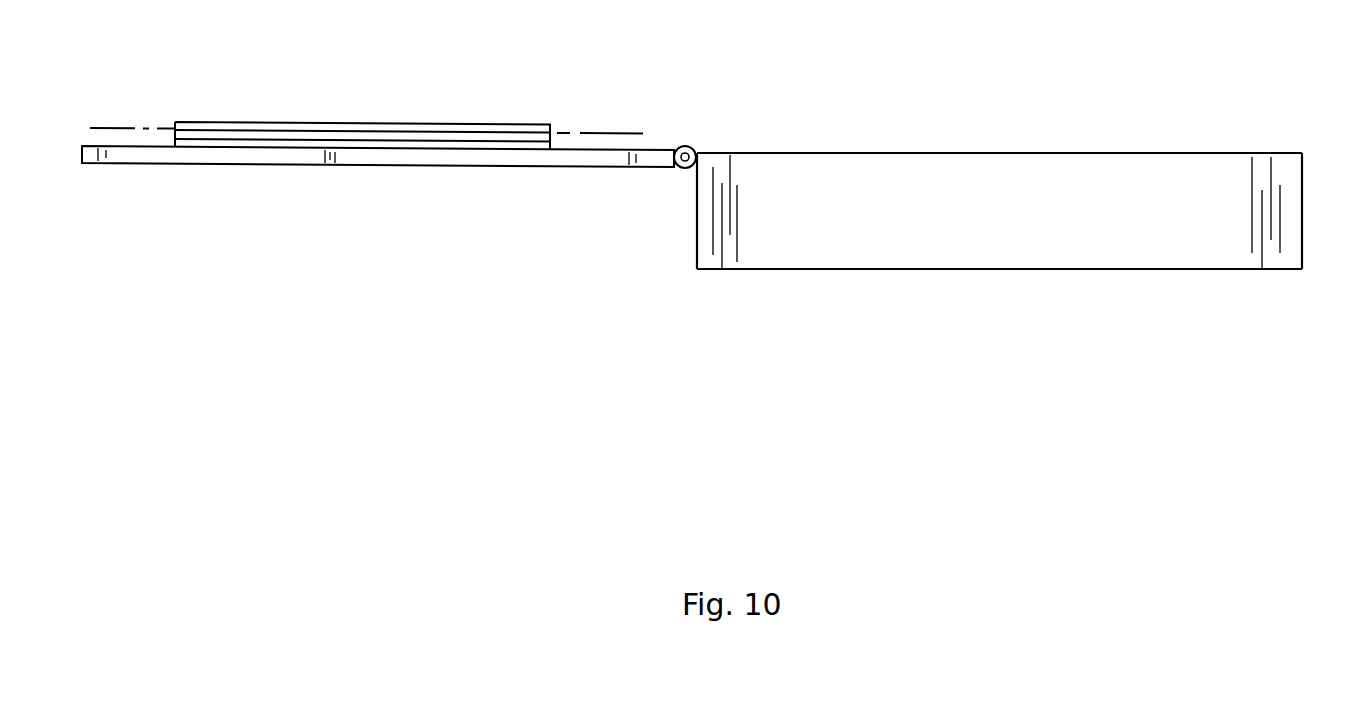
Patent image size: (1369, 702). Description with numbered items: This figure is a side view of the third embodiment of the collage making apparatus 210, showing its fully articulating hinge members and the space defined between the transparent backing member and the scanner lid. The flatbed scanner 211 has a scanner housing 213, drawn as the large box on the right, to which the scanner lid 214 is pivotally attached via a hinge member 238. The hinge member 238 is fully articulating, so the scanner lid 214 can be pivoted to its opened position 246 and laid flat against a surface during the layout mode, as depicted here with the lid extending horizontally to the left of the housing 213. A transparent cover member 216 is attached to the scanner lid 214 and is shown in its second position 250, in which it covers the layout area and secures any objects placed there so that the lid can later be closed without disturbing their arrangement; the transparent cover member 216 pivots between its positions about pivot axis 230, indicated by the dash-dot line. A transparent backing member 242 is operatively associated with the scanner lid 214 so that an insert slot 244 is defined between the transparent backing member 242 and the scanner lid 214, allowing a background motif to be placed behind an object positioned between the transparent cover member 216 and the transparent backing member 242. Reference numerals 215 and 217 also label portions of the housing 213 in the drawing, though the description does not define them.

The collage making apparatus 210 is at (268, 167).
The flatbed scanner 211 is at (1303, 242).
The scanner housing 213 is at (877, 272).
The scanner lid 214 is at (527, 167).
The housing top wall 215 is at (1168, 152).
The transparent cover member 216 is at (413, 123).
The end hinge portion 217 is at (1262, 270).
The pivot axis 230 is at (134, 128).
The hinge member 238 is at (676, 167).
The transparent backing member 242 is at (527, 124).
The insert slot 244 is at (398, 147).
The opened position 246 is at (158, 165).
The second position 250 is at (278, 128).